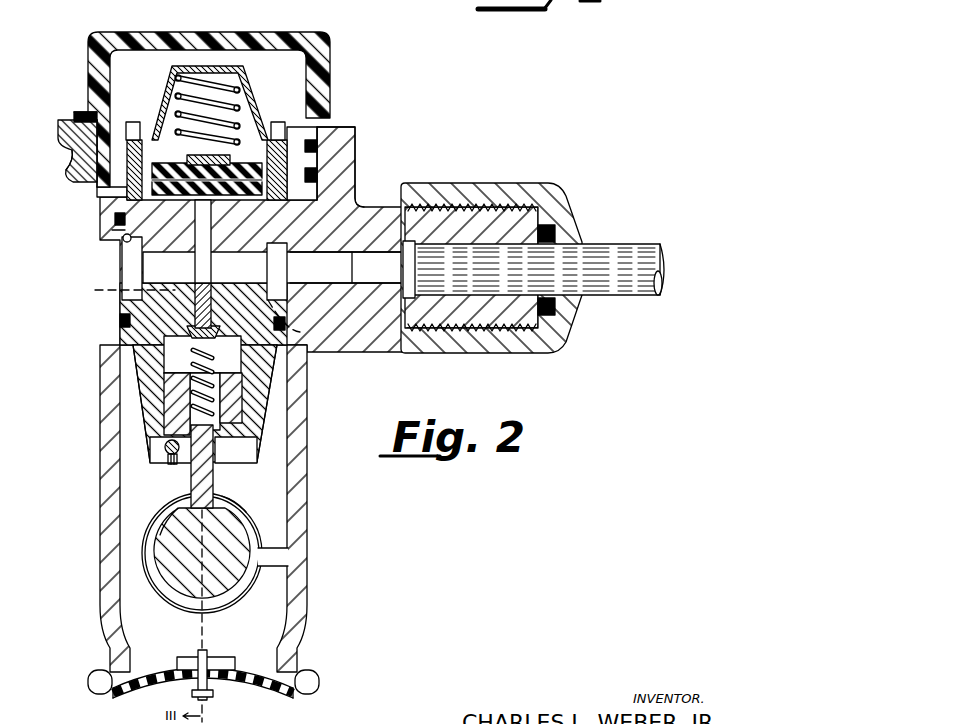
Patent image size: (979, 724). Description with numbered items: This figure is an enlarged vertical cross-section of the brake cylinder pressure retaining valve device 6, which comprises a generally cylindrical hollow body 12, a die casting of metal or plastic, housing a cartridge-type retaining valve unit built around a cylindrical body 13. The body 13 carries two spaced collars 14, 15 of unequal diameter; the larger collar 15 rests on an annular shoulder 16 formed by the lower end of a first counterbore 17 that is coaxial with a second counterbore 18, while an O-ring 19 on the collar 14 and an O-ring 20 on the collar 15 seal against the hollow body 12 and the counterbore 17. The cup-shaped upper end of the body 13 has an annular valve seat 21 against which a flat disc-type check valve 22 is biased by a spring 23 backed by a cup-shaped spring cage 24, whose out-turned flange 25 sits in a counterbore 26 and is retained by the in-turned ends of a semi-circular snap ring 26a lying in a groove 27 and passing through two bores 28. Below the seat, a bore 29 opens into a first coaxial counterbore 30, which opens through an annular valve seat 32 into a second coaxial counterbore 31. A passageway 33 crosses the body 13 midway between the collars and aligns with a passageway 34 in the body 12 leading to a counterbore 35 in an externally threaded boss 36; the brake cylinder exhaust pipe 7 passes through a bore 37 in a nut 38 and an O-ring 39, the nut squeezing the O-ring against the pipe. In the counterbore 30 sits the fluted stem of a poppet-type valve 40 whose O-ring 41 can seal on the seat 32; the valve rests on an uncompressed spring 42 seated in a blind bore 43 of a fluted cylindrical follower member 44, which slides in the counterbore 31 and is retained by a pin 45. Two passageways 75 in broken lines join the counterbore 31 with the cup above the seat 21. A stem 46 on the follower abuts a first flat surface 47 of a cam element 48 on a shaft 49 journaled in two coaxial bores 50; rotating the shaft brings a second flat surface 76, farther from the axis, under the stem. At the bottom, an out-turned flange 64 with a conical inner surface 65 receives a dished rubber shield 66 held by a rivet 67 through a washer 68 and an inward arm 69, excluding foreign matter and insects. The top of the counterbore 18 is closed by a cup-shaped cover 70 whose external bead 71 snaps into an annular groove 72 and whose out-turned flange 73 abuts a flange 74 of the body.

The brake cylinder pressure retaining valve device 6 is at (93, 532).
The brake cylinder exhaust pipe 7 is at (632, 246).
The generally cylindrical hollow body 12 is at (108, 422).
The cylindrical body 13 is at (150, 368).
The collar 14 is at (125, 338).
The collar 15 is at (120, 236).
The annular shoulder 16 is at (127, 240).
The first counterbore 17 is at (110, 192).
The second counterbore 18 is at (100, 180).
The O-ring 19 is at (124, 321).
The O-ring 20 is at (115, 220).
The annular valve seat 21 is at (322, 205).
The flat disc-type check valve 22 is at (320, 185).
The spring 23 is at (228, 100).
The cup-shaped spring cage 24 is at (240, 85).
The out-turned flange 25 is at (330, 148).
The counterbore 26 is at (146, 130).
The semi-circular snap ring 26a is at (268, 138).
The groove 27 is at (88, 115).
The bores 28 is at (147, 120).
The bore 29 is at (212, 206).
The first coaxial counterbore 30 is at (213, 225).
The second coaxial counterbore 31 is at (245, 345).
The annular valve seat 32 is at (285, 305).
The passageway 33 is at (155, 265).
The passageway 34 is at (352, 270).
The counterbore 35 is at (398, 290).
The externally threaded boss 36 is at (486, 312).
The bore 37 is at (582, 293).
The nut 38 is at (545, 196).
The O-ring 39 is at (555, 233).
The poppet-type valve 40 is at (165, 352).
The O-ring 41 is at (250, 335).
The spring 42 is at (180, 415).
The blind bore 43 is at (197, 405).
The cylindrical follower member 44 is at (235, 400).
The pin 45 is at (168, 445).
The stem 46 is at (214, 476).
The first flat surface 47 is at (178, 508).
The cam element 48 is at (220, 582).
The shaft 49 is at (258, 568).
The coaxial bores 50 is at (246, 512).
The out-turned flange 64 is at (100, 682).
The conical inner surface 65 is at (118, 690).
The dished circular shield 66 is at (136, 693).
The rivet 67 is at (206, 698).
The washer 68 is at (240, 700).
The arm 69 is at (238, 650).
The cup-shaped cover 70 is at (214, 18).
The external bead 71 is at (72, 164).
The annular groove 72 is at (318, 160).
The out-turned flange 73 is at (75, 116).
The out-turned annular flange 74 is at (70, 135).
The passageways 75 is at (95, 290).
The second flat surface 76 is at (262, 548).